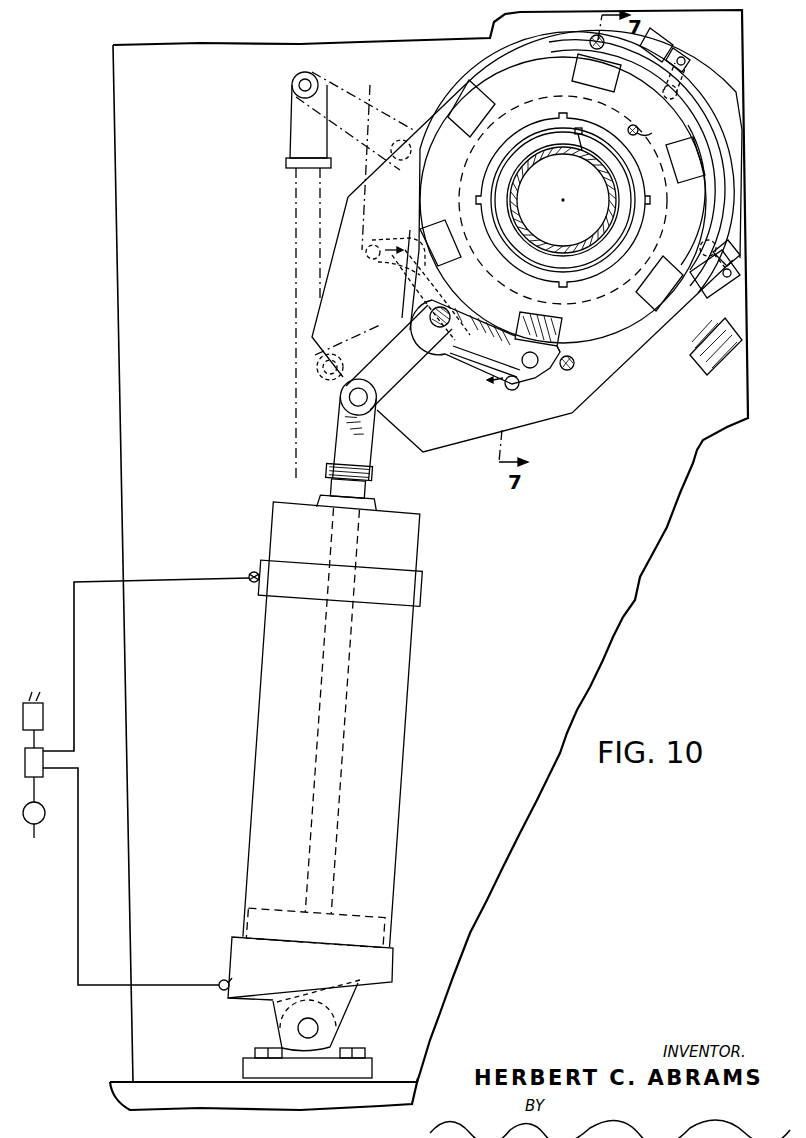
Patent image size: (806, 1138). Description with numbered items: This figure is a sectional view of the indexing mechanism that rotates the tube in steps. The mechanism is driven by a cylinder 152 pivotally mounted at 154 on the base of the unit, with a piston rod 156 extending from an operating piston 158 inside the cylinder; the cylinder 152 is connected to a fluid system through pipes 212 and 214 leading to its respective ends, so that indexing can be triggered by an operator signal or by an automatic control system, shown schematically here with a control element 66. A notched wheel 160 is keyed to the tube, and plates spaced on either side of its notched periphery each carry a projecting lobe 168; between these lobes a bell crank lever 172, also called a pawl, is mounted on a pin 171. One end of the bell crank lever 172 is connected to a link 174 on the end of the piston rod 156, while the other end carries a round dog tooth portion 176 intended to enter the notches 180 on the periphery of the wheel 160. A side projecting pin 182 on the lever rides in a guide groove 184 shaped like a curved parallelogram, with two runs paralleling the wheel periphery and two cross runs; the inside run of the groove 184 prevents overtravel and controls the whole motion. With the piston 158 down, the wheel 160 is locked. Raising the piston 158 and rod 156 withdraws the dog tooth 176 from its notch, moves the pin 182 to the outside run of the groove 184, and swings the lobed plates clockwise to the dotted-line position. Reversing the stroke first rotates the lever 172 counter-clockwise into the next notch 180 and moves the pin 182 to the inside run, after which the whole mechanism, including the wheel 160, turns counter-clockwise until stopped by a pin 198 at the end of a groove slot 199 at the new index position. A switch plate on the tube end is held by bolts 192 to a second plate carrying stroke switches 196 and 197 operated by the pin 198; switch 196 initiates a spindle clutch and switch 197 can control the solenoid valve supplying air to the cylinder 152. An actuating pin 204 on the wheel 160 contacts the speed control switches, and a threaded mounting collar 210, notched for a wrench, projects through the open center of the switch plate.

The control switch 66 is at (34, 763).
The cylinder 152 is at (263, 717).
The pivotal mounting 154 is at (327, 1023).
The piston rod 156 is at (300, 213).
The operating piston 158 is at (395, 925).
The notched wheel 160 is at (501, 99).
The projecting lobe 168 is at (412, 291).
The pin 171 is at (442, 328).
The bell crank lever 172 is at (364, 95).
The link 174 is at (373, 452).
The dog tooth portion 176 is at (547, 360).
The notches 180 is at (575, 80).
The side projecting pin 182 is at (532, 370).
The guide groove 184 is at (485, 353).
The bolts 192 is at (592, 38).
The stroke switch 196 is at (673, 38).
The stroke switch 197 is at (735, 300).
The pin 198 is at (661, 95).
The groove slot 199 is at (708, 133).
The actuating pin 204 is at (654, 124).
The threaded mounting collar 210 is at (548, 140).
The pipe 212 is at (222, 988).
The pipe 214 is at (252, 571).